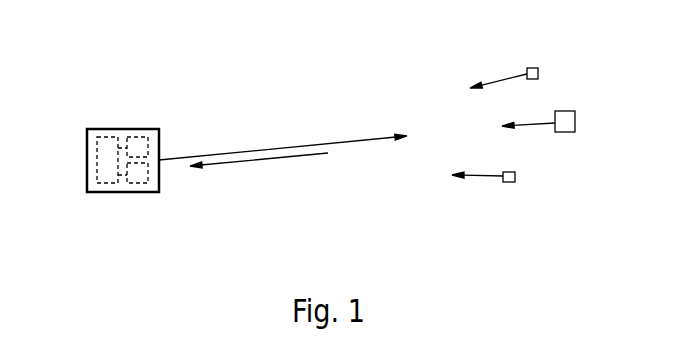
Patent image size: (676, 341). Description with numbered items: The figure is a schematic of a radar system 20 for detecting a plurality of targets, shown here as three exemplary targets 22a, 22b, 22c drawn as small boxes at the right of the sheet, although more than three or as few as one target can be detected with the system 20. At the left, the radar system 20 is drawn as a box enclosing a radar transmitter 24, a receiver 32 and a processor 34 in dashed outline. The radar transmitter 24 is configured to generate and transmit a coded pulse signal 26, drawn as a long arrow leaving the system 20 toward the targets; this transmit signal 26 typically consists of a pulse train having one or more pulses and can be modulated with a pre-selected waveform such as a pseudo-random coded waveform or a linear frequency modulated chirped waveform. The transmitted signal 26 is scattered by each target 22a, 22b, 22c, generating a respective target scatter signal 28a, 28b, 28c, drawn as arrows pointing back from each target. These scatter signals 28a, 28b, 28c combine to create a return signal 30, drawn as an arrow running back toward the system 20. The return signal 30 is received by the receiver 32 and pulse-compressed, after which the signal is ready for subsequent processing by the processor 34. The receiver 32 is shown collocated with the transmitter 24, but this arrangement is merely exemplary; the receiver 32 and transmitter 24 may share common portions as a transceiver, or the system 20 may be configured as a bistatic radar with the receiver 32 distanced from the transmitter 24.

The radar system 20 is at (97, 130).
The radar transmitter 24 is at (138, 147).
The coded pulse signal 26 is at (352, 140).
The return signal 30 is at (258, 160).
The receiver 32 is at (140, 176).
The processor 34 is at (108, 160).
The target 22a is at (567, 111).
The target 22b is at (533, 68).
The target 22c is at (510, 182).
The target scatter signal 28a is at (535, 125).
The target scatter signal 28b is at (510, 78).
The target scatter signal 28c is at (488, 177).